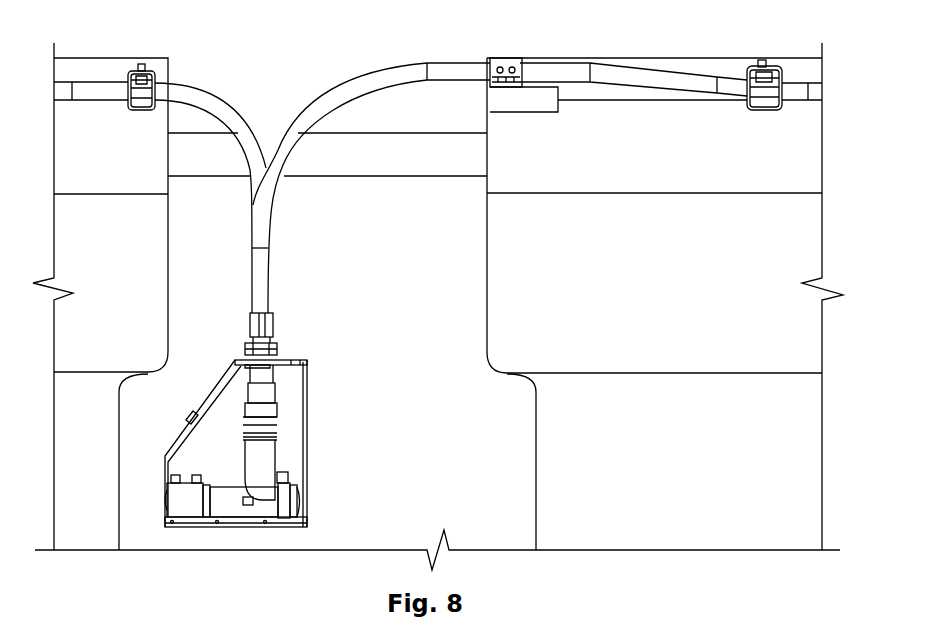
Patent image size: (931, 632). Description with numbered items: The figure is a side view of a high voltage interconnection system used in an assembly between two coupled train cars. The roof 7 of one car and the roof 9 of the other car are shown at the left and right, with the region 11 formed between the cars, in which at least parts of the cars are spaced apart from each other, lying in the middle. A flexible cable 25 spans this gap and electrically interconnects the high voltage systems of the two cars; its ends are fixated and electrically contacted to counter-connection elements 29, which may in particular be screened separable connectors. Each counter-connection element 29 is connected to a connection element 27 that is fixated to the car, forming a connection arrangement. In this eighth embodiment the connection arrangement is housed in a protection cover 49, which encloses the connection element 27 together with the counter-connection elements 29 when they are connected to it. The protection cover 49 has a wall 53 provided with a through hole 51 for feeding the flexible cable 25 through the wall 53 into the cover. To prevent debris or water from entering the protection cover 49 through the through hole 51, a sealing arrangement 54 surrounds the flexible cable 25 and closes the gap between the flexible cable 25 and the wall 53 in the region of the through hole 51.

The roof 7 is at (112, 58).
The roof 9 is at (745, 58).
The flexible cable 25 is at (185, 83).
The region 11 is at (388, 359).
The wall 53 is at (280, 358).
The sealing arrangement 54 is at (236, 346).
The through hole 51 is at (275, 371).
The counter-connection element 29 is at (268, 450).
The connection element 27 is at (187, 512).
The protection cover 49 is at (237, 527).